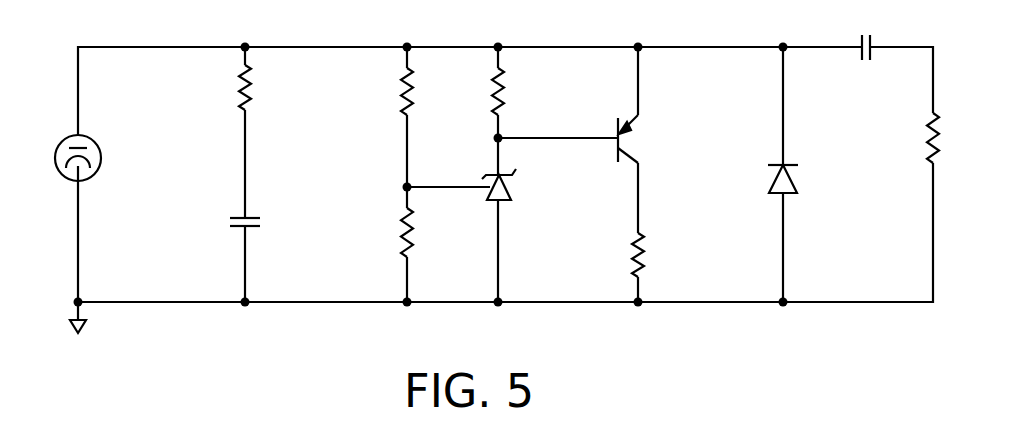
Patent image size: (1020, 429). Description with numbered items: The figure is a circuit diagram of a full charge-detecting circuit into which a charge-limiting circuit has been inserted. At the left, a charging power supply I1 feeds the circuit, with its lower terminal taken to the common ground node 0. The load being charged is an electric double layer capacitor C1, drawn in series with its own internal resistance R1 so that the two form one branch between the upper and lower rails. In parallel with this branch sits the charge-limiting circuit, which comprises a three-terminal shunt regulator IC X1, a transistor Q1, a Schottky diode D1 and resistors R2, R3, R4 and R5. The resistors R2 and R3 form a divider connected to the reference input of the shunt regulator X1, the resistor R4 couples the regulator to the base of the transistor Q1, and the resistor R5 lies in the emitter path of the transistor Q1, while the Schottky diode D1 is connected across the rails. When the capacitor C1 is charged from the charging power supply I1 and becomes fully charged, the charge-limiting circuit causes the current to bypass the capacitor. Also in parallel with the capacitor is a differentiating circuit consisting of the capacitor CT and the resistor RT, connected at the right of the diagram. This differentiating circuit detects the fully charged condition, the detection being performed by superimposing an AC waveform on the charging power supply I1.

The charging power supply I1 is at (91, 176).
The ground node 0 is at (85, 328).
The internal resistance R1 is at (238, 94).
The electric double layer capacitor C1 is at (232, 222).
The resistor R2 is at (439, 127).
The resistor R3 is at (415, 240).
The resistor R4 is at (524, 111).
The three-terminal shunt regulator IC X1 is at (513, 200).
The transistor Q1 is at (634, 133).
The resistor R5 is at (646, 252).
The Schottky diode D1 is at (769, 181).
The capacitor of differentiating circuit CT is at (852, 62).
The resistor of differentiating circuit RT is at (925, 149).